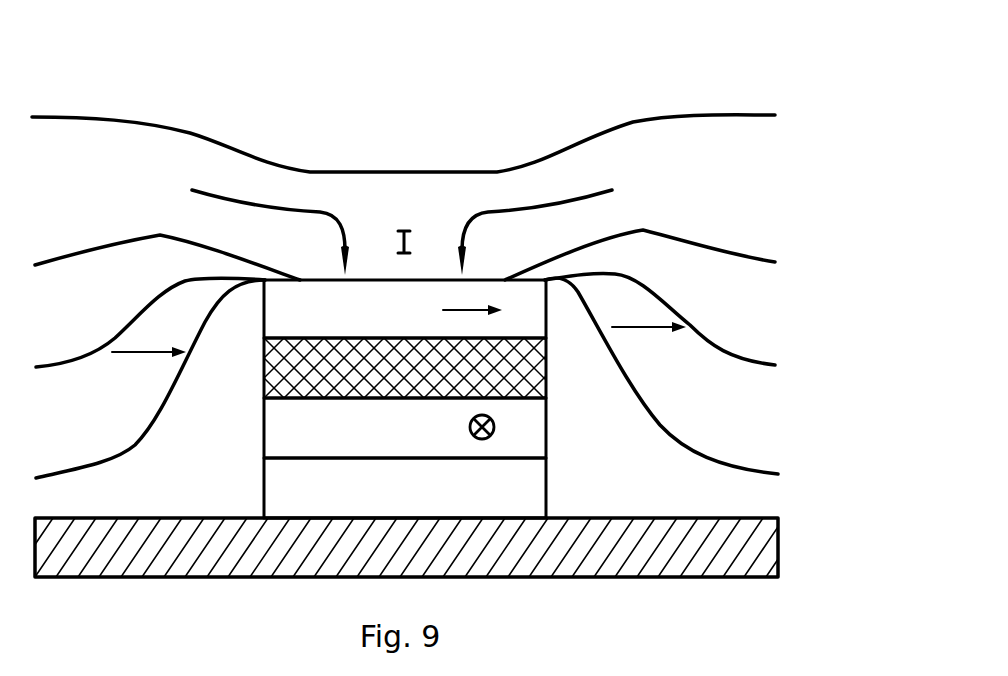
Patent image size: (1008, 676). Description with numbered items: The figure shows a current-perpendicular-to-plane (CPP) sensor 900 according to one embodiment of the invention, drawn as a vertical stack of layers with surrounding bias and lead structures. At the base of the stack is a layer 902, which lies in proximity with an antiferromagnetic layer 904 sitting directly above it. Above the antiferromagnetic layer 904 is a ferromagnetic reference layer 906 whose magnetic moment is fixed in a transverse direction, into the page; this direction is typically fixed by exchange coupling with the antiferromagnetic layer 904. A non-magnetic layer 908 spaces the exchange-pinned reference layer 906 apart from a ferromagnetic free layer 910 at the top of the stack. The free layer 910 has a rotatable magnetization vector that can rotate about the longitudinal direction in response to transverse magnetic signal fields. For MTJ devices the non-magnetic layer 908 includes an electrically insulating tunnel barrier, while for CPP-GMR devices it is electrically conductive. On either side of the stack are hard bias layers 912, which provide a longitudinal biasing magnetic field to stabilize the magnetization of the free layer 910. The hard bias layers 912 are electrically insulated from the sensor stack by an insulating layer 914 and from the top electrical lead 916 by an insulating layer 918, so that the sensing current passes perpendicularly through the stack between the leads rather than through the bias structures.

The current-perpendicular-to-plane (CPP) sensor 900 is at (833, 192).
The layer 902 is at (403, 547).
The antiferromagnetic layer 904 is at (405, 488).
The ferromagnetic reference layer 906 is at (405, 428).
The non-magnetic layer 908 is at (404, 368).
The ferromagnetic free layer 910 is at (405, 309).
The hard bias layers 912 is at (405, 337).
The insulating layer 914 is at (407, 378).
The top electrical lead 916 is at (403, 195).
The insulating layer 918 is at (405, 276).